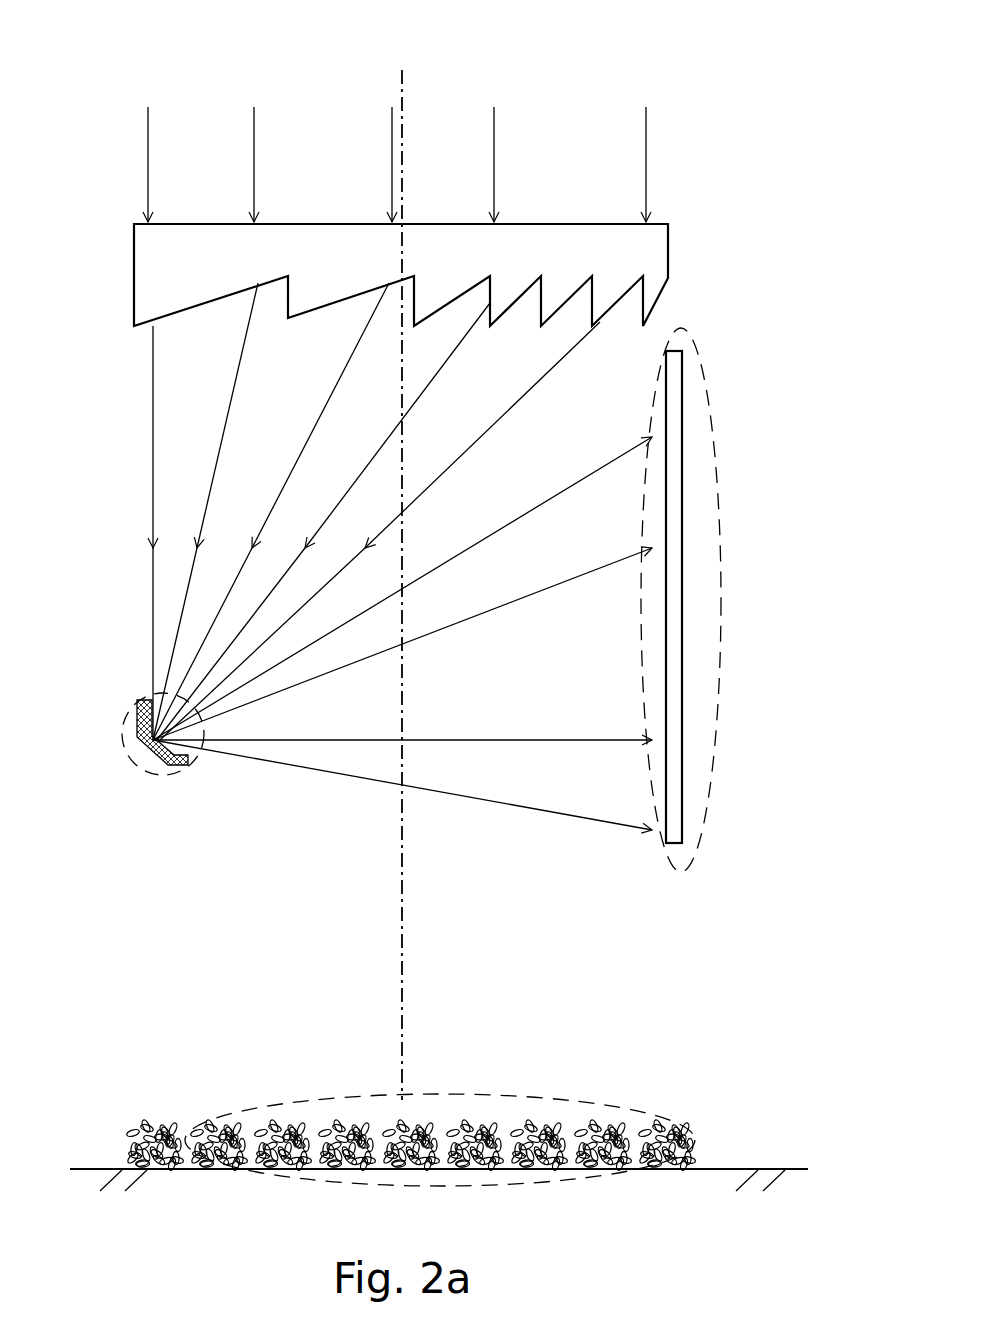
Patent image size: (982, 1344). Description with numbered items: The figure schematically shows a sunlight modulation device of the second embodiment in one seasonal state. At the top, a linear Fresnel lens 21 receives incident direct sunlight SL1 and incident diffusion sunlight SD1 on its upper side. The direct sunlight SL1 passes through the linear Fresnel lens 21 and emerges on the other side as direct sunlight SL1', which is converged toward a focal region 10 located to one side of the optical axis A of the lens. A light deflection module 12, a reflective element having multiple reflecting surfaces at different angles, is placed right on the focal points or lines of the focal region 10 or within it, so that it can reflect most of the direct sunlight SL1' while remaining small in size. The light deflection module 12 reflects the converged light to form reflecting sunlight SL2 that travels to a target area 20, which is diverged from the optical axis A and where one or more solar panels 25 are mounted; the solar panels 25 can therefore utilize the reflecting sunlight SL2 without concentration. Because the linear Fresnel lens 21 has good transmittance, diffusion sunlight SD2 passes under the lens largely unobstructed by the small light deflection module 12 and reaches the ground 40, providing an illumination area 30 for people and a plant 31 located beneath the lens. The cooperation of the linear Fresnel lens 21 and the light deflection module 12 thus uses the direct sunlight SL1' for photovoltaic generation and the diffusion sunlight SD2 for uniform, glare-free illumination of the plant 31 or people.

The focal region 10 is at (152, 776).
The light deflection module 12 is at (133, 722).
The target area 20 is at (720, 588).
The linear Fresnel lens 21 is at (465, 275).
The solar panel 25 is at (683, 672).
The illumination area 30 is at (465, 1188).
The plant 31 is at (408, 1120).
The ground 40 is at (732, 1168).
The optical axis A is at (421, 578).
The direct sunlight SL1 is at (394, 164).
The direct sunlight SL1' is at (345, 511).
The reflecting sunlight SL2 is at (600, 568).
The diffusion sunlight SD1 is at (175, 80).
The diffusion sunlight SD2 is at (352, 893).